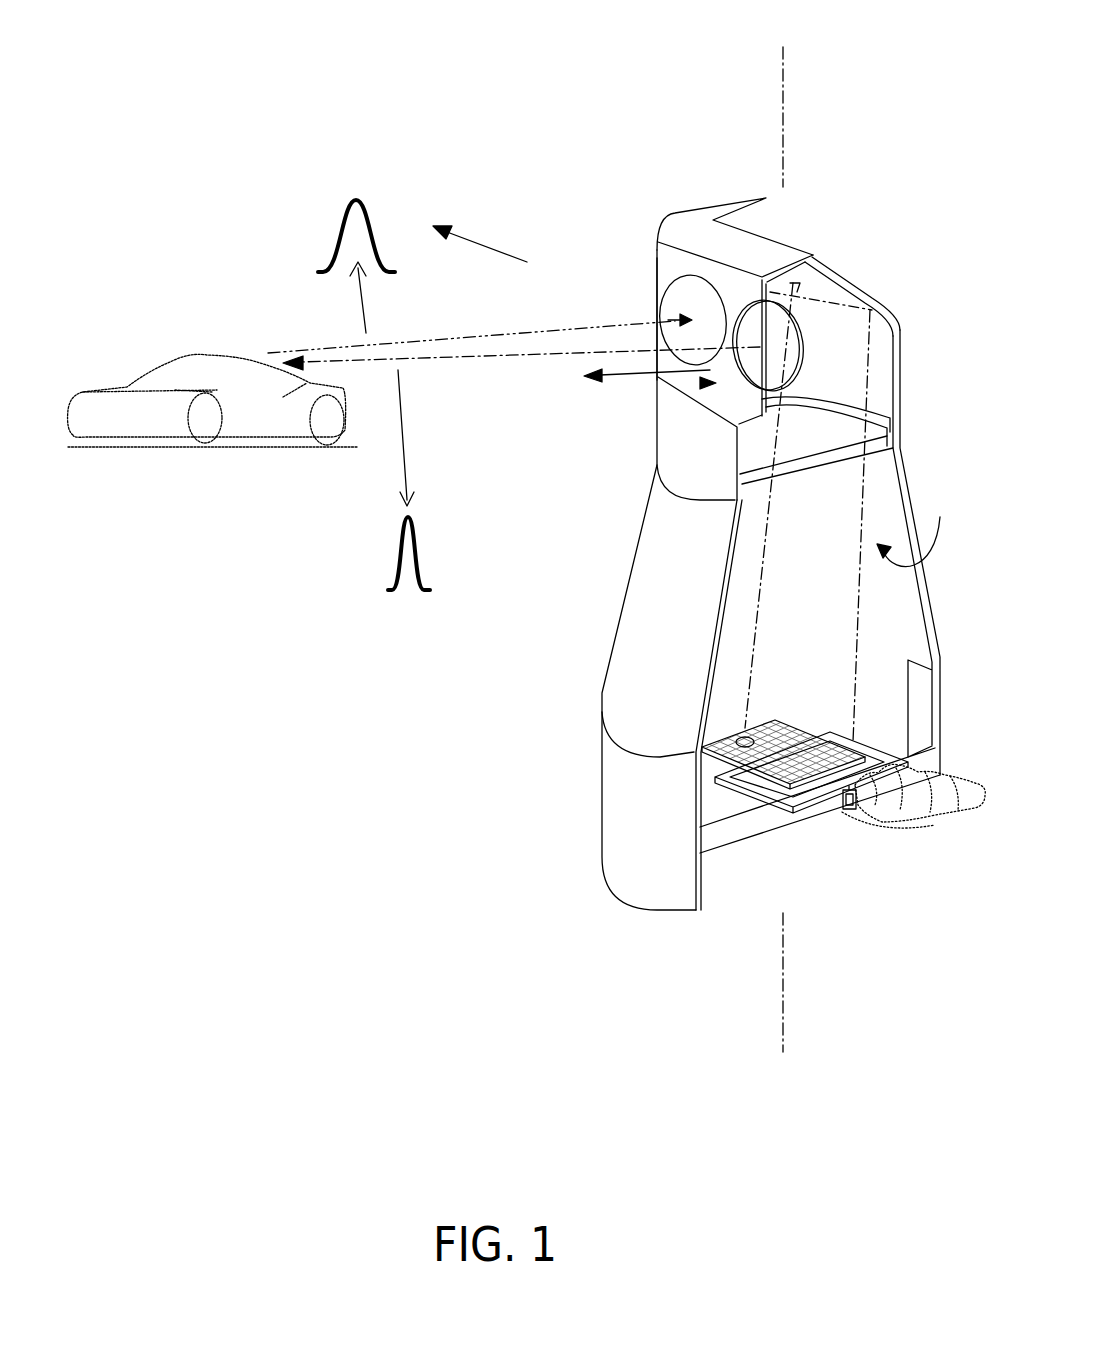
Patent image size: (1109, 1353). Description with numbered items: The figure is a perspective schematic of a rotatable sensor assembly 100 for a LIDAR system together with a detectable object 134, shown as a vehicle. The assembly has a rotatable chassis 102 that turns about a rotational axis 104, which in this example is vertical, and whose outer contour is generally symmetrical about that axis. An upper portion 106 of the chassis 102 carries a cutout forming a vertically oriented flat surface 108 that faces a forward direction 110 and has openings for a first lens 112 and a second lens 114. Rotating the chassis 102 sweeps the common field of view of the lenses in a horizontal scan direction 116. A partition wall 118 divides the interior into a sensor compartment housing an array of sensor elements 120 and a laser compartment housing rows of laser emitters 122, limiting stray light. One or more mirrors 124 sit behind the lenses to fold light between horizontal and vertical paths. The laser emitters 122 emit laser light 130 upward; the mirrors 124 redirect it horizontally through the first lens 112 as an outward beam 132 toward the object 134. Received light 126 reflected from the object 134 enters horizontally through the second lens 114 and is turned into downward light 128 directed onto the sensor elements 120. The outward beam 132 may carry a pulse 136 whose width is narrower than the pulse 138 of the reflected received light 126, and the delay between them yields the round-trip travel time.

The rotatable sensor assembly 100 is at (585, 74).
The rotatable chassis 102 is at (667, 212).
The rotational axis 104 is at (784, 83).
The upper portion 106 is at (657, 258).
The flat surface 108 is at (704, 383).
The forward direction 110 is at (613, 385).
The first lens 112 is at (747, 300).
The second lens 114 is at (679, 272).
The scan direction 116 is at (473, 238).
The partition wall 118 is at (919, 531).
The sensor elements 120 is at (742, 736).
The laser emitters 122 is at (852, 812).
The mirrors 124 is at (877, 296).
The received light 126 is at (498, 333).
The downward light 128 is at (773, 520).
The laser light 130 is at (853, 695).
The outward beam 132 is at (533, 357).
The object 134 is at (173, 360).
The pulse 136 is at (402, 540).
The pulse 138 is at (340, 196).